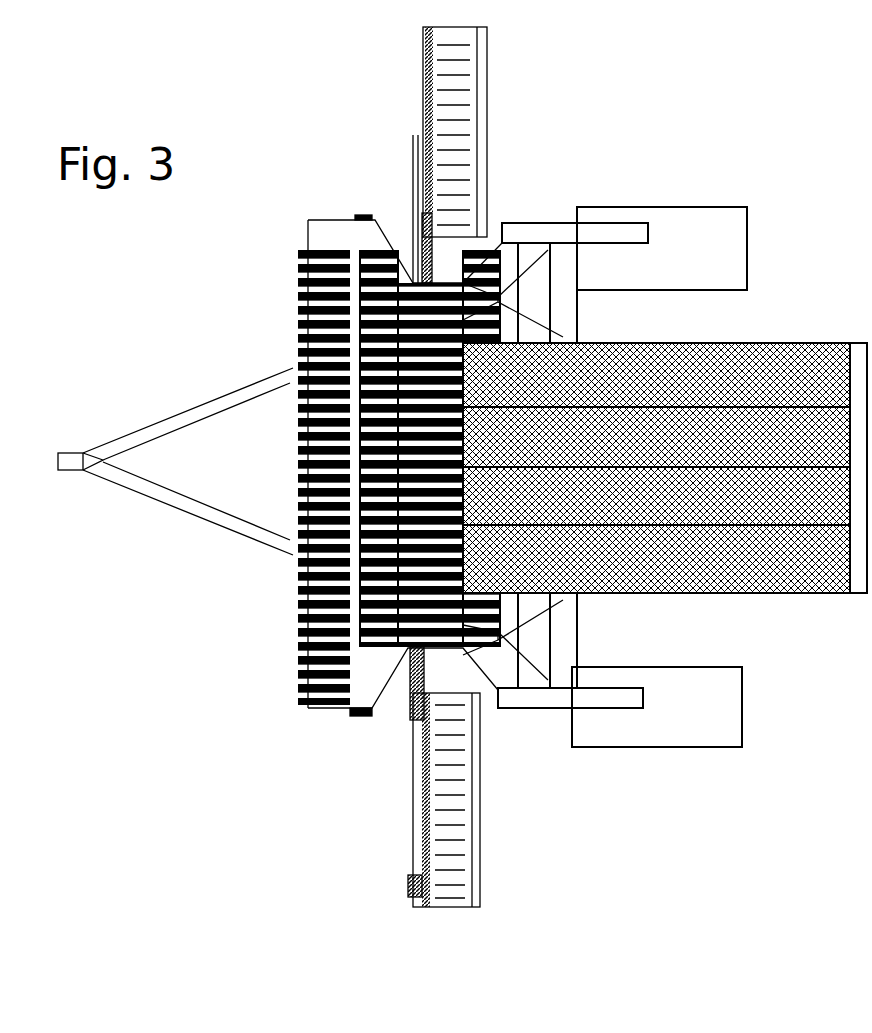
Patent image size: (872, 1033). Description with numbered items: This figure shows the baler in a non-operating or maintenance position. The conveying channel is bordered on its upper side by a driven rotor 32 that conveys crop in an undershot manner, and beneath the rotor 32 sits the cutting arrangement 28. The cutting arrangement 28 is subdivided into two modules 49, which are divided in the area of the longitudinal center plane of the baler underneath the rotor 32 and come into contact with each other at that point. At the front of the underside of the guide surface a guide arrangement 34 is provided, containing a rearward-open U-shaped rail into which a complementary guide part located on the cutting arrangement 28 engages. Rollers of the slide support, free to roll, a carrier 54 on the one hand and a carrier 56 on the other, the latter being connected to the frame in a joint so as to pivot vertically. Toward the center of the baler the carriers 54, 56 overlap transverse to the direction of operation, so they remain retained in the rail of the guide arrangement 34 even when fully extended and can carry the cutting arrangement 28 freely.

The cutting arrangement 28 is at (487, 135).
The rotor 32 is at (370, 318).
The guide arrangement 34 is at (410, 207).
The module 49 is at (500, 86).
The carrier 54 is at (413, 852).
The carrier 56 is at (416, 135).